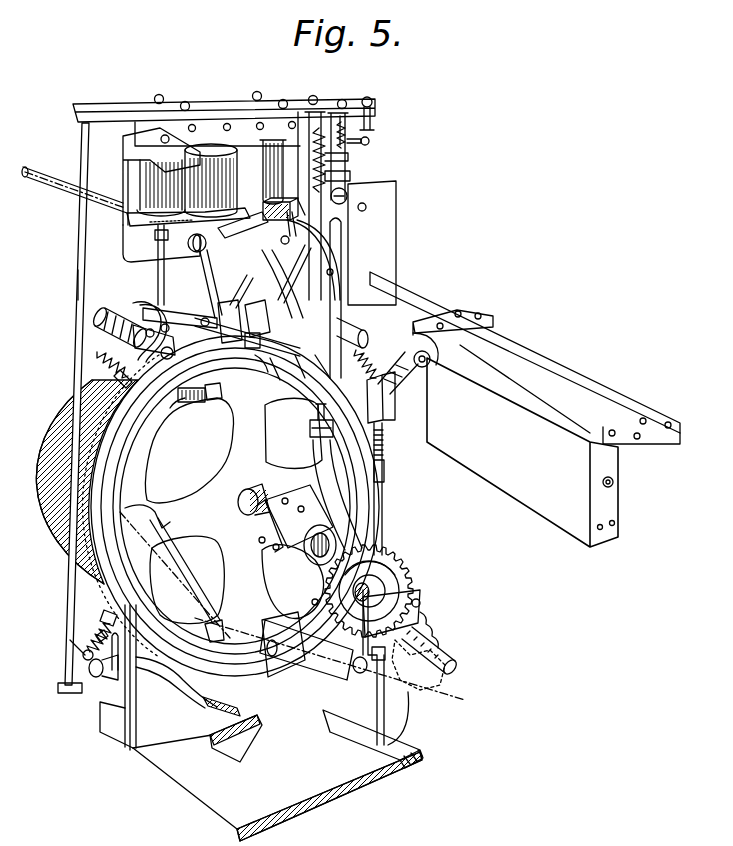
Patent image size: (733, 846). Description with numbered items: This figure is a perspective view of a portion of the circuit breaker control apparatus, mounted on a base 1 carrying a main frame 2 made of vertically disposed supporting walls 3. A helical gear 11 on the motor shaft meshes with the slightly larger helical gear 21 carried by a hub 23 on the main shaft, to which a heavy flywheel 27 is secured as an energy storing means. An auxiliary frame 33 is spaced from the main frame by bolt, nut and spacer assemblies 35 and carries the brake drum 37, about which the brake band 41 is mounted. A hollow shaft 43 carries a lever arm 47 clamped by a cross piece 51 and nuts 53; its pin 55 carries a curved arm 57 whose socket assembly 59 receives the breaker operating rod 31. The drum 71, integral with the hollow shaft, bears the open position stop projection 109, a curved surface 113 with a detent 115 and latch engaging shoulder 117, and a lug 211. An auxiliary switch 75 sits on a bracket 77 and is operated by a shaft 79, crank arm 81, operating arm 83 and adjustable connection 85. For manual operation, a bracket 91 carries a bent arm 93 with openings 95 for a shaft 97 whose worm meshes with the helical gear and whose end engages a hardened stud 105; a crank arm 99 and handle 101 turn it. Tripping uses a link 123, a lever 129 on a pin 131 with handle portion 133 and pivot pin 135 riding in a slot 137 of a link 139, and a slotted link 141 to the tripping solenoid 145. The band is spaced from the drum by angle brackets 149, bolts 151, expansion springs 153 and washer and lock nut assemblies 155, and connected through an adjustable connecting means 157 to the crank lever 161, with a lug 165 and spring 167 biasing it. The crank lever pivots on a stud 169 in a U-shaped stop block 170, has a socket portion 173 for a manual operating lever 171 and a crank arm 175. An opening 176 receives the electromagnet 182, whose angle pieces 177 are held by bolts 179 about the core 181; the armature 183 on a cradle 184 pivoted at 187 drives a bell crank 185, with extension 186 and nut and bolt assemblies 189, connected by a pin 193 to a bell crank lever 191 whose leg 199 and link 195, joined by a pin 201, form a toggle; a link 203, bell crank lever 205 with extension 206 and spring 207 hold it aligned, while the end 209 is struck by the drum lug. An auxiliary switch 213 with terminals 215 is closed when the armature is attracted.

The base 1 is at (200, 783).
The main frame 2 is at (127, 728).
The supporting walls 3 is at (391, 210).
The helical gear 11 is at (432, 628).
The helical gear 21 is at (405, 558).
The hub 23 is at (372, 582).
The flywheel 27 is at (45, 463).
The breaker operating rod 31 is at (313, 422).
The auxiliary frame 33 is at (100, 283).
The bolt, nut and spacer assemblies 35 is at (90, 670).
The brake drum 37 is at (95, 486).
The brake band 41 is at (100, 407).
The hollow shaft 43 is at (258, 533).
The lever arm 47 is at (305, 578).
The cross piece 51 is at (270, 544).
The nuts 53 is at (300, 497).
The pin 55 is at (315, 598).
The curved arm 57 is at (268, 490).
The socket assembly 59 is at (385, 457).
The drum 71 is at (128, 462).
The auxiliary switch 75 is at (578, 546).
The bracket 77 is at (428, 293).
The shaft 79 is at (430, 370).
The crank arm 81 is at (406, 382).
The operating arm 83 is at (388, 490).
The adjustable connection 85 is at (386, 413).
The bracket 91 is at (345, 688).
The bent arm 93 is at (270, 663).
The opening 95 is at (268, 630).
The shaft 97 is at (298, 680).
The crank arm 99 is at (160, 536).
The handle 101 is at (75, 546).
The hardened stud 105 is at (426, 690).
The open position stop projection 109 is at (190, 410).
The curved surface 113 is at (275, 380).
The detent 115 is at (215, 403).
The latch engaging shoulder 117 is at (236, 382).
The link 123 is at (248, 315).
The lever 129 is at (105, 302).
The pin 131 is at (140, 318).
The handle portion 133 is at (112, 336).
The pivot pin 135 is at (215, 302).
The slot 137 is at (190, 393).
The link 139 is at (218, 388).
The slotted link 141 is at (170, 325).
The tripping solenoid 145 is at (142, 178).
The angle brackets 149 is at (120, 343).
The bolts 151 is at (97, 358).
The expansion spring 153 is at (105, 372).
The washer and lock nut assembly 155 is at (92, 642).
The adjustable connecting means 157 is at (160, 300).
The crank lever 161 is at (208, 300).
The lug 165 is at (281, 305).
The spring 167 is at (296, 318).
The stud 169 is at (250, 278).
The U-shaped stop block 170 is at (205, 292).
The manual operating lever 171 is at (73, 192).
The socket portion 173 is at (165, 270).
The crank arm 175 is at (275, 245).
The opening 176 is at (128, 236).
The angle pieces 177 is at (207, 125).
The bolts 179 is at (228, 128).
The core 181 is at (200, 215).
The electromagnet 182 is at (229, 143).
The armature 183 is at (230, 226).
The cradle 184 is at (268, 208).
The bell crank 185 is at (333, 180).
The extension 186 is at (338, 158).
The pivot 187 is at (364, 203).
The nut and bolt assemblies 189 is at (285, 205).
The bell crank lever 191 is at (340, 321).
The pin 193 is at (335, 270).
The link 195 is at (291, 236).
The leg 199 is at (322, 262).
The pin 201 is at (305, 255).
The link 203 is at (290, 285).
The bell crank lever 205 is at (265, 365).
The extension 206 is at (252, 340).
The spring 207 is at (316, 168).
The end 209 is at (325, 380).
The lug 211 is at (300, 378).
The auxiliary switch 213 is at (376, 141).
The terminals 215 is at (372, 98).